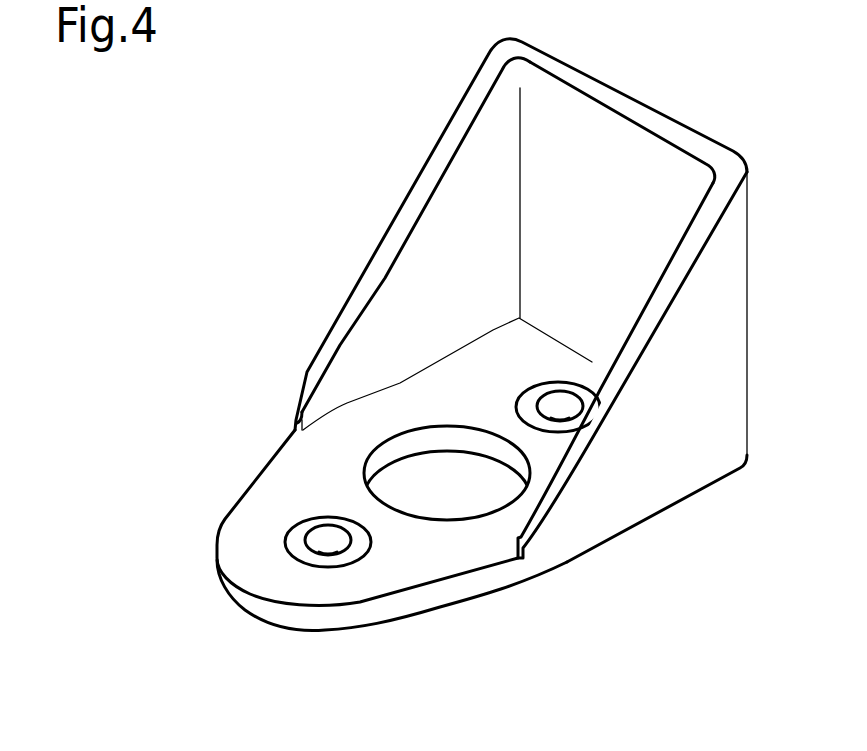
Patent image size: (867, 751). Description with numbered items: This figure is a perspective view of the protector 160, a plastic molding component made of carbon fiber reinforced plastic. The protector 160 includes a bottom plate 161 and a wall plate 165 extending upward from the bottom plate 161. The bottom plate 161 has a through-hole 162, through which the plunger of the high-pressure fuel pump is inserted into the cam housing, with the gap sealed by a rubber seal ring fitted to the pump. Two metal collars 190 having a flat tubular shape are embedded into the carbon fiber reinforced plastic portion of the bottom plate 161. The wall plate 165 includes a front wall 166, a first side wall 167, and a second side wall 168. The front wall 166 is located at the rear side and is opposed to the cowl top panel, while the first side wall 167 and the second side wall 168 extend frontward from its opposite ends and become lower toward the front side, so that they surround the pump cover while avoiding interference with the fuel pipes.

The protector 160 is at (296, 98).
The bottom plate 161 is at (252, 513).
The through-hole 162 is at (452, 443).
The wall plate 165 is at (658, 117).
The front wall 166 is at (588, 127).
The first side wall 167 is at (674, 428).
The second side wall 168 is at (422, 183).
The metal collar 190 is at (327, 520).